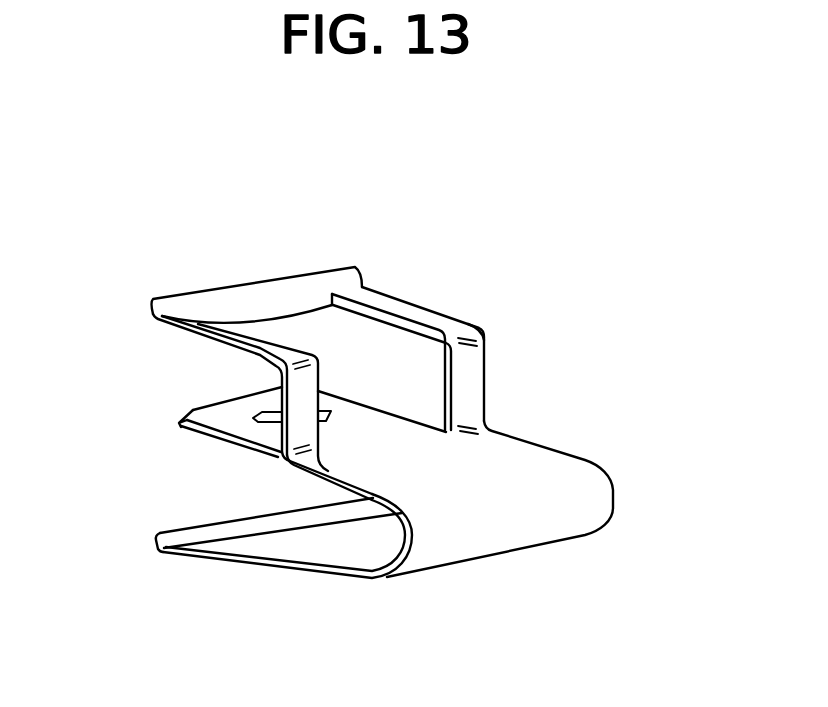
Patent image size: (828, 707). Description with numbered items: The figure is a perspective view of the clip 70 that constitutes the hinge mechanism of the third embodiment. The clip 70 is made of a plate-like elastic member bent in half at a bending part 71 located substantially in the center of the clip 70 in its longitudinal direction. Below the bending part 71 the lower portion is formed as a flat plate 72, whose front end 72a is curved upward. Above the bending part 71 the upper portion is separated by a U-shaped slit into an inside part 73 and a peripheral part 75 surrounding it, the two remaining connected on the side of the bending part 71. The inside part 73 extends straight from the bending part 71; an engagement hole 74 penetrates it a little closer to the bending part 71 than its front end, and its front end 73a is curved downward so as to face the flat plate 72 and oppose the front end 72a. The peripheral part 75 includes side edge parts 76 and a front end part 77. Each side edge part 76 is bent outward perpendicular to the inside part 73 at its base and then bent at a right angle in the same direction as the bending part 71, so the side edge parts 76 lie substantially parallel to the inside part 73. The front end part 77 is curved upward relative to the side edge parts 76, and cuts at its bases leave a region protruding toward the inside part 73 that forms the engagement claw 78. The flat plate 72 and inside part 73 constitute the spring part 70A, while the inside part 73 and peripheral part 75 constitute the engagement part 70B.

The clip 70 is at (446, 229).
The spring part 70A is at (291, 502).
The engagement part 70B is at (436, 379).
The bending part 71 is at (588, 505).
The flat plate 72 is at (309, 556).
The front end of the flat plate 72a is at (232, 523).
The inside part 73 is at (373, 423).
The front end of the inside part 73a is at (184, 423).
The engagement hole 74 is at (270, 416).
The peripheral part 75 is at (458, 320).
The side edge parts 76 is at (208, 324).
The front end part 77 is at (268, 290).
The engagement claw 78 is at (297, 313).